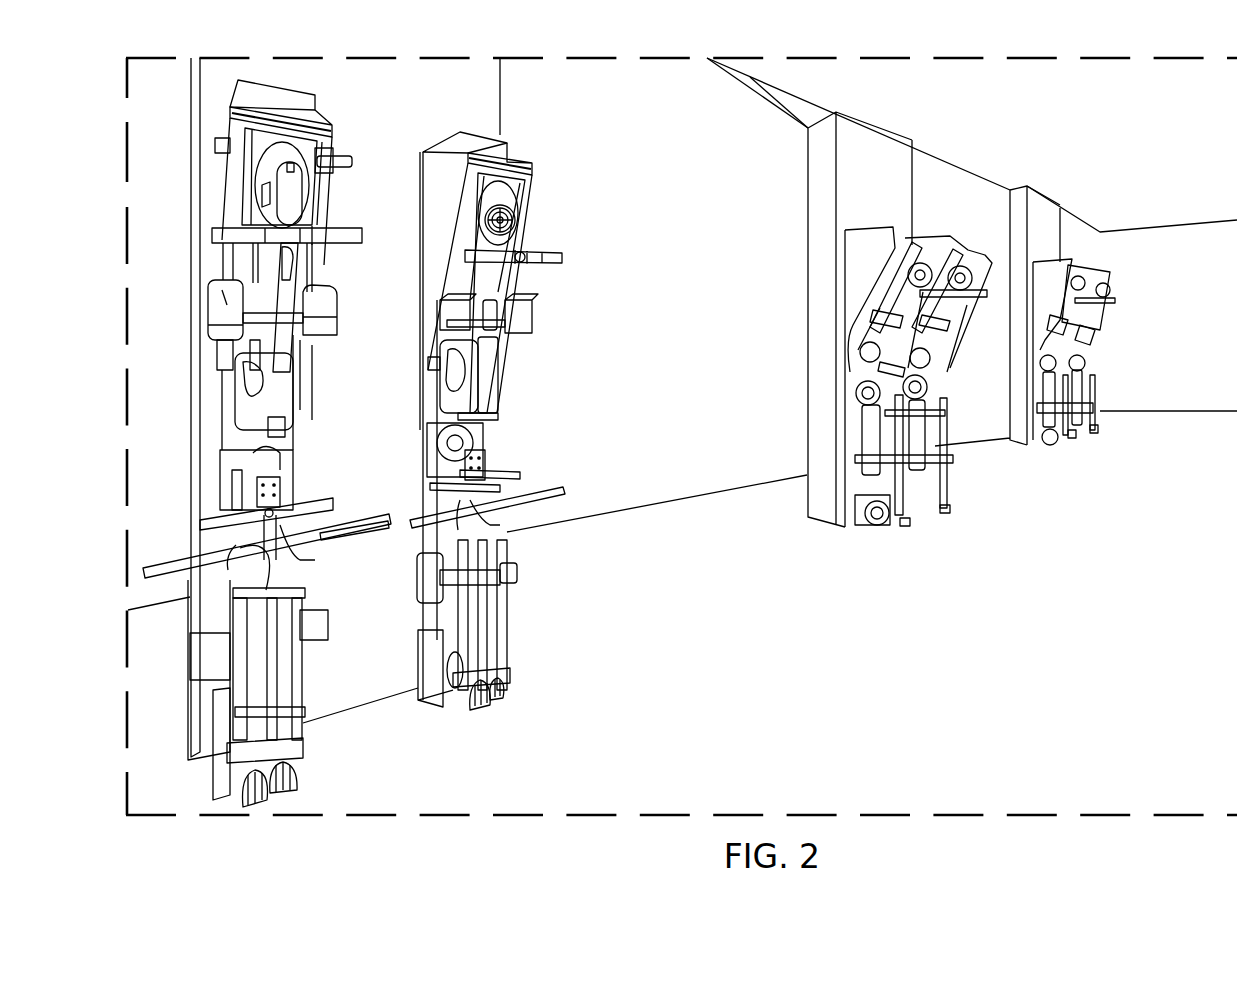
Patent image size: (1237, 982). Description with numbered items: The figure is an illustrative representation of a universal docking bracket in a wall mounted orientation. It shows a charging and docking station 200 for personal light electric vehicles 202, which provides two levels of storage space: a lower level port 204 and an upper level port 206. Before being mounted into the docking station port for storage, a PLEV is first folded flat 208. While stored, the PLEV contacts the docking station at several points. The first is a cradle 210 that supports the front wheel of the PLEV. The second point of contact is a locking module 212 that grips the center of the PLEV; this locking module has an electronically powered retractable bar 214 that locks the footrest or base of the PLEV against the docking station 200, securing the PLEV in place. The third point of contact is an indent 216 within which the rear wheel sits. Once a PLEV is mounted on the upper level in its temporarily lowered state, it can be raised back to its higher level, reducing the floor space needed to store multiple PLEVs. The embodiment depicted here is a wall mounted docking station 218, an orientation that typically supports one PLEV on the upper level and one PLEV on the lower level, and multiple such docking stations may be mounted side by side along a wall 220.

The charging and docking station 200 is at (445, 132).
The personal light electric vehicle 202 is at (497, 700).
The lower level port 204 is at (860, 527).
The upper level port 206 is at (870, 292).
The folded flat PLEV 208 is at (505, 680).
The cradle 210 is at (250, 378).
The locking module 212 is at (222, 290).
The retractable bar 214 is at (335, 310).
The indent 216 is at (297, 168).
The wall mounted docking station 218 is at (1048, 446).
The wall 220 is at (1085, 257).